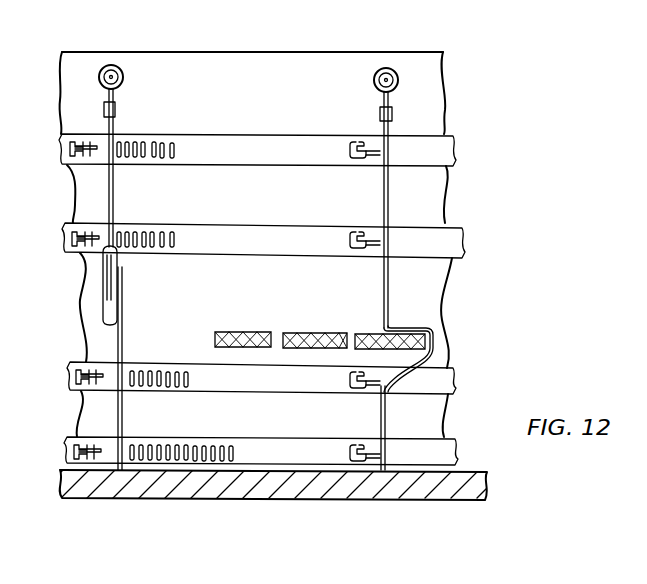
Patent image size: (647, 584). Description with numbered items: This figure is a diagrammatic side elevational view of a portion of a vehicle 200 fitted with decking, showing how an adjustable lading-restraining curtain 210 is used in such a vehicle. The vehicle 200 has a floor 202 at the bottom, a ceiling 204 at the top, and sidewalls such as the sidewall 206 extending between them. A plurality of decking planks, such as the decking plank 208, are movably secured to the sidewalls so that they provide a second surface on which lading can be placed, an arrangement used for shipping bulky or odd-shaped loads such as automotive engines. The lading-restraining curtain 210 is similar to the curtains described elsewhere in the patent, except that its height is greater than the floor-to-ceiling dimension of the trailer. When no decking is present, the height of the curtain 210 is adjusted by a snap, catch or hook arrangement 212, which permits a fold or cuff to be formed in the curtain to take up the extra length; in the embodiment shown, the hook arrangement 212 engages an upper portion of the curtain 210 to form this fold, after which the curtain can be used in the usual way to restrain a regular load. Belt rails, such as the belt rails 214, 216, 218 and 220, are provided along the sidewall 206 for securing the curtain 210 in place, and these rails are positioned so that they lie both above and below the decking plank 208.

The vehicle 200 is at (447, 100).
The floor 202 is at (318, 500).
The ceiling 204 is at (218, 51).
The sidewall 206 is at (256, 117).
The decking plank 208 is at (440, 356).
The lading-restraining curtain 210 is at (100, 189).
The hook arrangement 212 is at (118, 262).
The belt rail 214 is at (456, 456).
The belt rail 216 is at (455, 380).
The belt rail 218 is at (464, 240).
The belt rail 220 is at (462, 150).